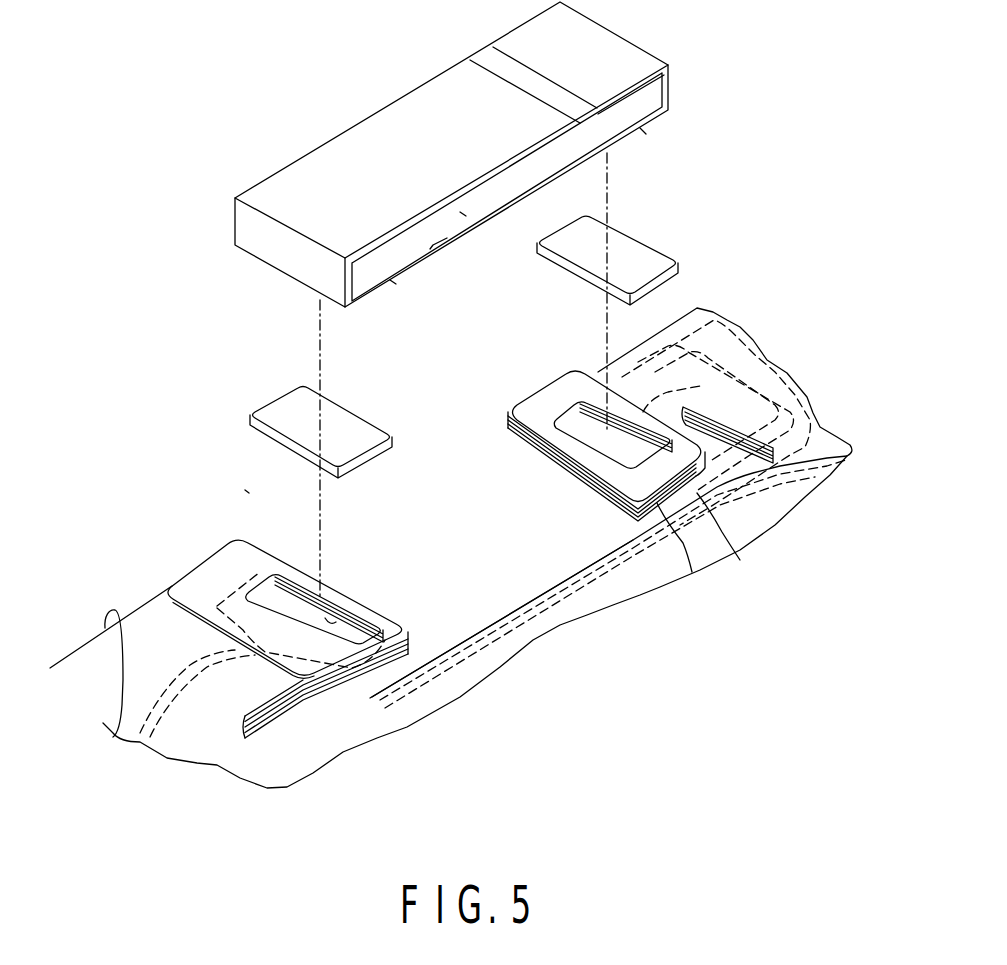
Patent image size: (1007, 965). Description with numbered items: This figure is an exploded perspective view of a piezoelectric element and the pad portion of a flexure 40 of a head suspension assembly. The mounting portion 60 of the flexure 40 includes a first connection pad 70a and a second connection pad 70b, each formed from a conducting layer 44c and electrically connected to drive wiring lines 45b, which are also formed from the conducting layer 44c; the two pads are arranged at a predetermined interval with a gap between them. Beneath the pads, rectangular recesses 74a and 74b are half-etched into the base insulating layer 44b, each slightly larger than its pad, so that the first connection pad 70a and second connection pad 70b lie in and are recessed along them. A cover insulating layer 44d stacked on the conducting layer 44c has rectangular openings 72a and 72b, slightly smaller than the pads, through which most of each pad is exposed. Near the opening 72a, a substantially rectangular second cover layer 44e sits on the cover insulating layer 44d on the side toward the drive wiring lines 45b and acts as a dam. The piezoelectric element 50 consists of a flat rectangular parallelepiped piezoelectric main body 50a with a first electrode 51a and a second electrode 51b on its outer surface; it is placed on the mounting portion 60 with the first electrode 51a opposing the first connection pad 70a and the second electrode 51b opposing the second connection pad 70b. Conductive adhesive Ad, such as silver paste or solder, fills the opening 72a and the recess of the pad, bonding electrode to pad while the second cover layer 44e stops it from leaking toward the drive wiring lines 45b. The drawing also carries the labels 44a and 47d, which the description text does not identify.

The flexure 40 is at (388, 748).
The fixing portion 44a is at (672, 525).
The base insulating layer 44b is at (708, 520).
The conducting layer 44c is at (727, 518).
The cover insulating layer 44d is at (140, 620).
The second cover layer 44e is at (182, 590).
The drive wiring lines 45b is at (150, 733).
The strap portion 47d is at (617, 596).
The piezoelectric element 50 is at (362, 150).
The piezoelectric main body 50a is at (463, 216).
The first electrode 51a is at (392, 282).
The second electrode 51b is at (643, 132).
The mounting portion 60 is at (240, 490).
The first connection pad 70a is at (360, 630).
The second connection pad 70b is at (612, 496).
The opening 72a is at (278, 583).
The opening 72b is at (538, 432).
The rectangular recess 74a is at (330, 623).
The rectangular recess 74b is at (638, 458).
The conductive adhesive Ad is at (648, 258).